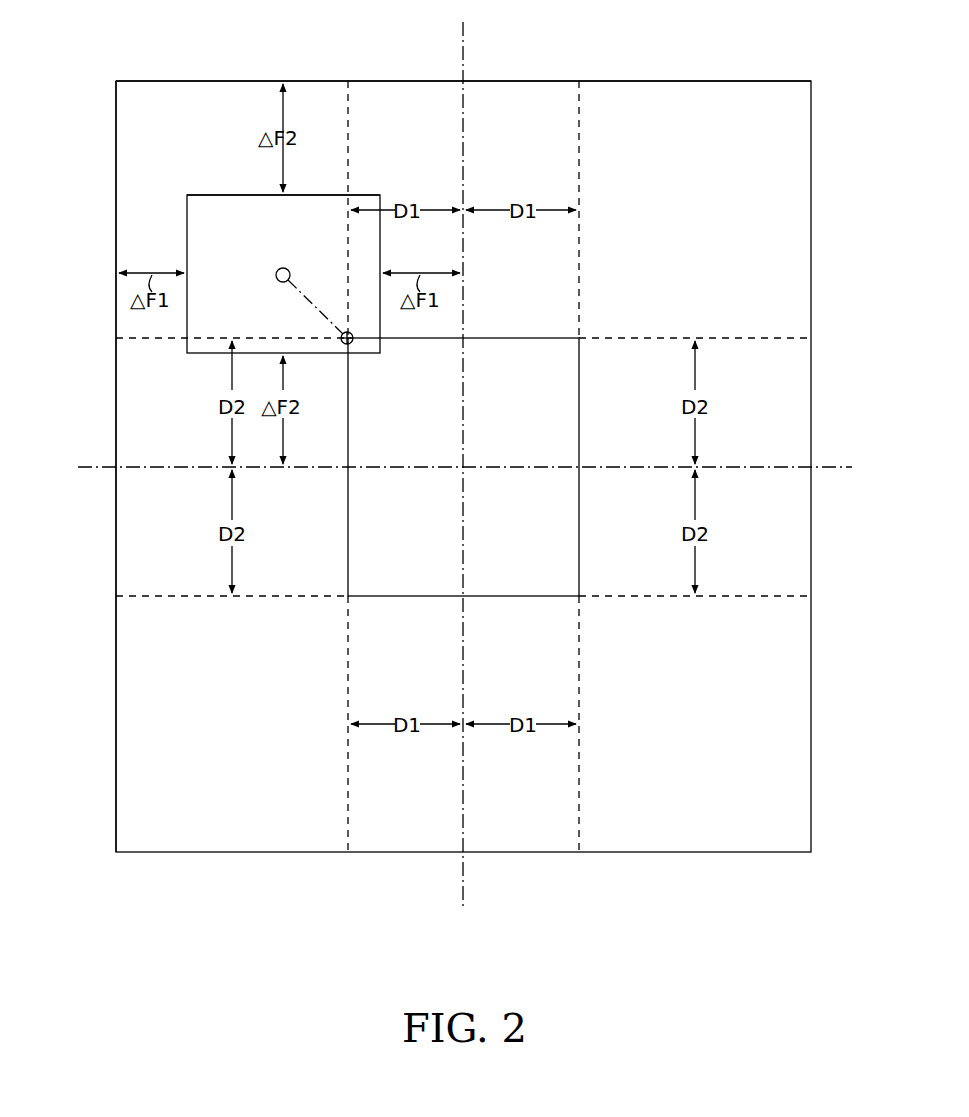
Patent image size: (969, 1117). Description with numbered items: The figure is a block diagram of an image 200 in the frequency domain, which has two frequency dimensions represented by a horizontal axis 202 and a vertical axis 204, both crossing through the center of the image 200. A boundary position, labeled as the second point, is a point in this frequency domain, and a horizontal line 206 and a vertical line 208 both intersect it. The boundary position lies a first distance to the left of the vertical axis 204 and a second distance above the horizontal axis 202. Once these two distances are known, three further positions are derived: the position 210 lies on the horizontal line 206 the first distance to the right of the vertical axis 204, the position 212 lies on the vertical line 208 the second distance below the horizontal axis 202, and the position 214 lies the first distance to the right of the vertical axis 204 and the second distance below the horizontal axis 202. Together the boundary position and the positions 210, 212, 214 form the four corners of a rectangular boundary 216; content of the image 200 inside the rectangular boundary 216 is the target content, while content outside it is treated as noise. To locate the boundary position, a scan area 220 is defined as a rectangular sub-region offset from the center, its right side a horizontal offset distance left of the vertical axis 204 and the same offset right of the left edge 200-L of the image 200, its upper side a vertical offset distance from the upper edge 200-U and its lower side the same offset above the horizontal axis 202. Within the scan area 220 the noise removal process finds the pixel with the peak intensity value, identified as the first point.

The image 200 is at (686, 75).
The left edge 200-L is at (116, 155).
The upper edge 200-U is at (172, 81).
The horizontal axis 202 is at (836, 467).
The vertical axis 204 is at (463, 52).
The horizontal line 206 is at (158, 340).
The vertical line 208 is at (350, 128).
The position 210 is at (580, 338).
The position 212 is at (348, 598).
The position 214 is at (581, 597).
The rectangular boundary 216 is at (580, 405).
The scan area 220 is at (362, 195).